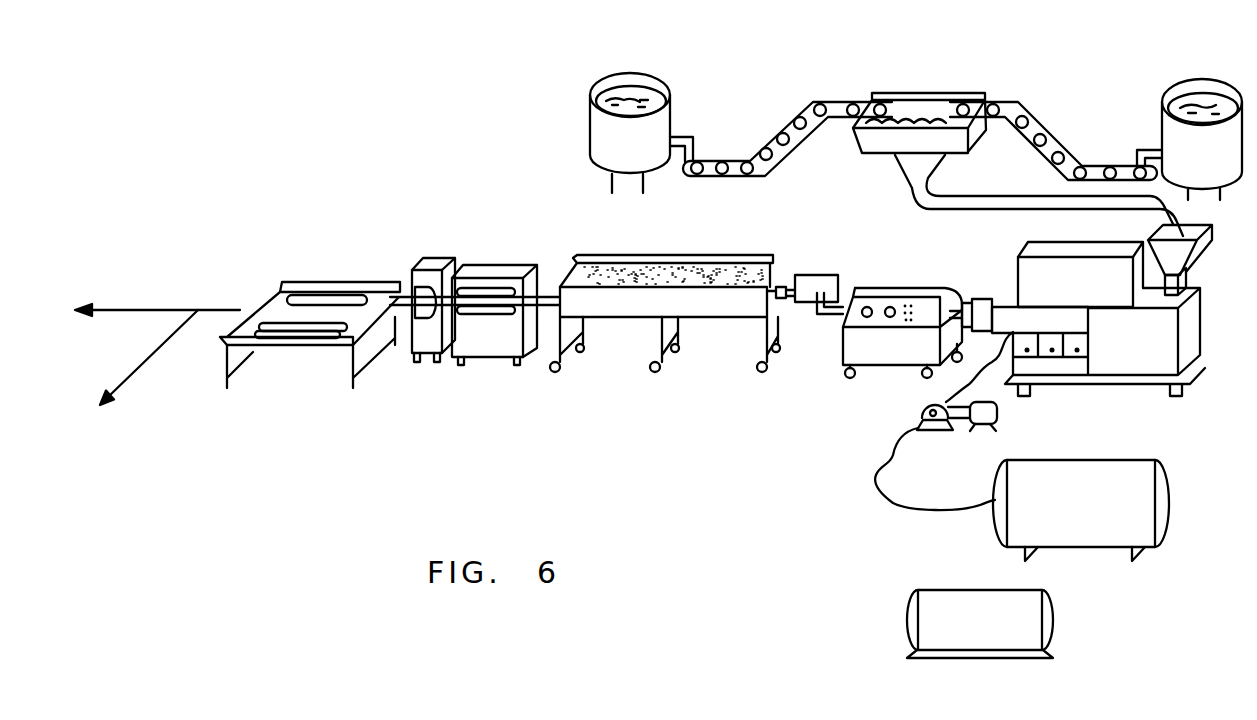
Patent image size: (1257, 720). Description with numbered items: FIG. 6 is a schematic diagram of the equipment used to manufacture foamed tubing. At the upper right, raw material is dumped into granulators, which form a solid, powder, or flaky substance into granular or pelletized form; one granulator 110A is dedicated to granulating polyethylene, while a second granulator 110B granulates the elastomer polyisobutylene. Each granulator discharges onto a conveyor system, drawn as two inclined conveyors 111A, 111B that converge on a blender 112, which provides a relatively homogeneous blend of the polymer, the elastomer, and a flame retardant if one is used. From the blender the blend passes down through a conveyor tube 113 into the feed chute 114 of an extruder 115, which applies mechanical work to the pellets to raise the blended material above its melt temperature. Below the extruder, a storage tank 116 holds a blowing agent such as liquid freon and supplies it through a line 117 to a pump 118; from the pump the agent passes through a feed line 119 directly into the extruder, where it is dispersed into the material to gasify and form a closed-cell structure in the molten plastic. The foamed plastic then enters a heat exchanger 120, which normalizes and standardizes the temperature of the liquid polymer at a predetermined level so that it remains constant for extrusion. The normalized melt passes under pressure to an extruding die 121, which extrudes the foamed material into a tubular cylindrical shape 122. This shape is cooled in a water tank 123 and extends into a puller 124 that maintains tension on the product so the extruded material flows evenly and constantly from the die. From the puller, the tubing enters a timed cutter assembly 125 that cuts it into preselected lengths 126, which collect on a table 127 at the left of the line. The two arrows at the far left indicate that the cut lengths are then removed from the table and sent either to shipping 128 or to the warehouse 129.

The granulator 110A is at (590, 125).
The second granulator 110B is at (1160, 113).
The conveyor system 111A is at (818, 102).
The conveyor system 111B is at (1012, 103).
The blender 112 is at (965, 140).
The conveyor tube 113 is at (957, 202).
The feed chute 114 is at (1207, 240).
The extruder 115 is at (1190, 330).
The storage tank 116 is at (1147, 475).
The line 117 is at (873, 470).
The pump 118 is at (920, 405).
The feed line 119 is at (983, 375).
The heat exchanger 120 is at (893, 292).
The extruding die 121 is at (805, 282).
The tubular cylindrical shape 122 is at (549, 296).
The water tank 123 is at (632, 298).
The puller 124 is at (498, 272).
The timed cutter assembly 125 is at (430, 262).
The lengths 126 is at (340, 298).
The table 127 is at (310, 280).
The shipping 128 is at (140, 365).
The warehouse 129 is at (112, 310).